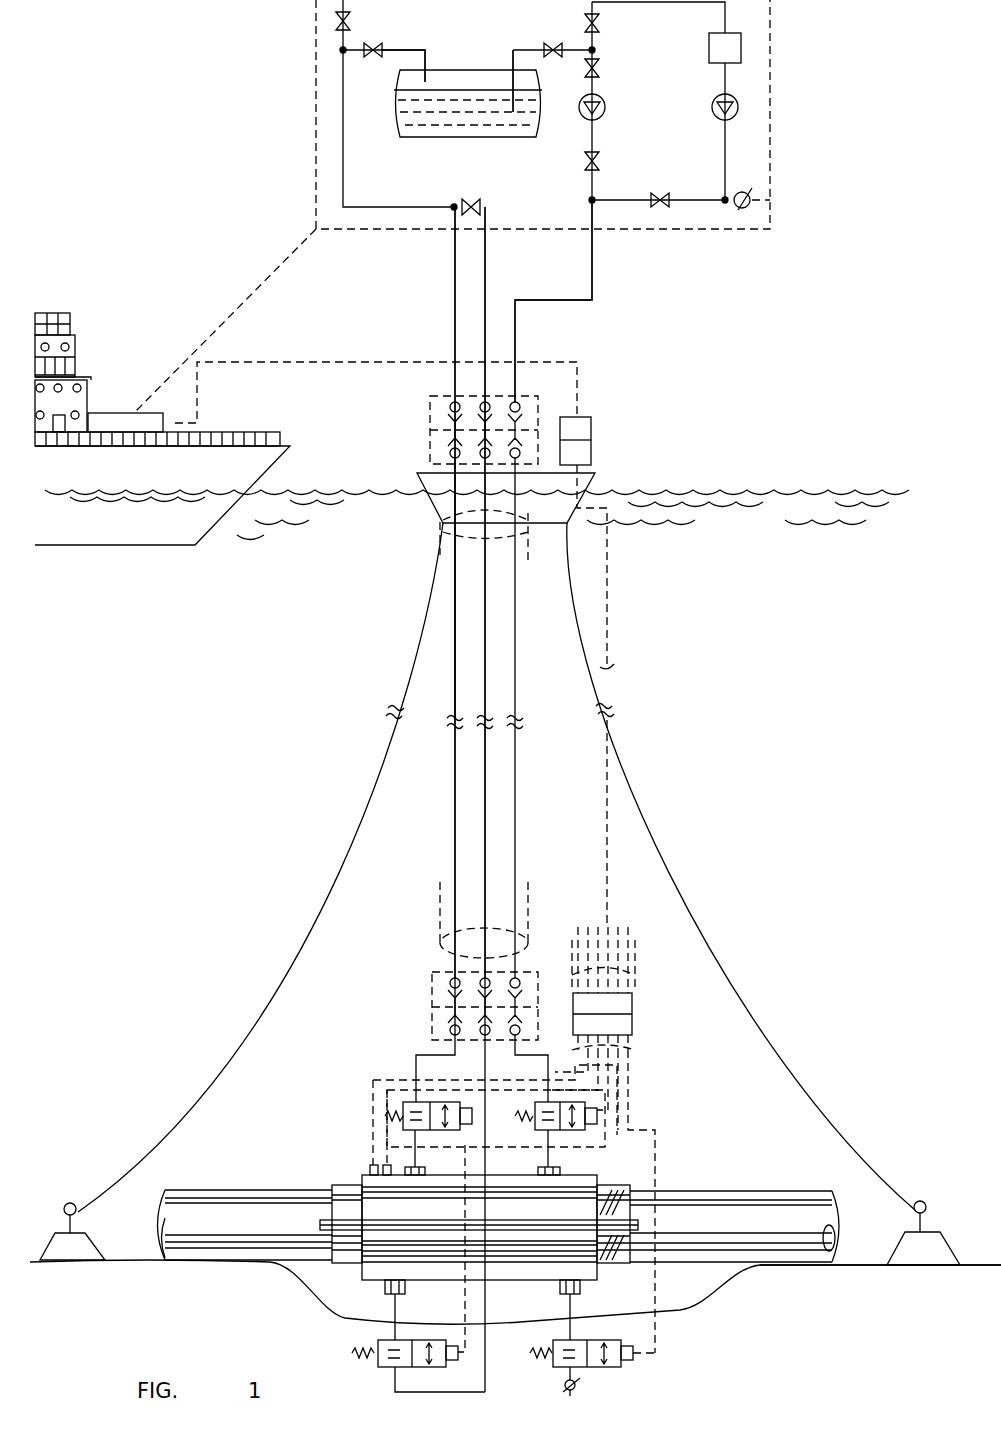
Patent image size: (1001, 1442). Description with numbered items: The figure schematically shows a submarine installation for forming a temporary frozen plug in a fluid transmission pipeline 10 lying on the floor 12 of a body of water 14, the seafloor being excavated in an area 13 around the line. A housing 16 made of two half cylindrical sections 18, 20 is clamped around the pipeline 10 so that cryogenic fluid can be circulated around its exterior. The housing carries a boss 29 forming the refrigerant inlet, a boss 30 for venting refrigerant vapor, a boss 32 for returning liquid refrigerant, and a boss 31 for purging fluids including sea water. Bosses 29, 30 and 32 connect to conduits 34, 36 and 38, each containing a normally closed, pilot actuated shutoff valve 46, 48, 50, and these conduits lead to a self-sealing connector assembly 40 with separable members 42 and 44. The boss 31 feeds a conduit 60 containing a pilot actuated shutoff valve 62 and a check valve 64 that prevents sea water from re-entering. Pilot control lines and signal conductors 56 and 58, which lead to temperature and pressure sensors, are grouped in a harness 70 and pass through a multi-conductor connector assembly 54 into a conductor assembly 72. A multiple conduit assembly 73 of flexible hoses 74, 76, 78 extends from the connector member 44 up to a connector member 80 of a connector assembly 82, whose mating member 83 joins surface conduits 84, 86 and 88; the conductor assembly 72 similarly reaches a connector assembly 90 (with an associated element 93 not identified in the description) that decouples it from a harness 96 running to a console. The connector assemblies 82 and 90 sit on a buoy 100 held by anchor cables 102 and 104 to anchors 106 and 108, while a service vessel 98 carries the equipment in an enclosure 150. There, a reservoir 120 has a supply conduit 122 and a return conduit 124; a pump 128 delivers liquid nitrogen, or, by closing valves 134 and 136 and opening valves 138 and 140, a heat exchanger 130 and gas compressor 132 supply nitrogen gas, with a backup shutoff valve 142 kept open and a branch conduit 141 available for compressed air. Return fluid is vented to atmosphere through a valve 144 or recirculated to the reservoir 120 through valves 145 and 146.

The fluid transmission pipeline 10 is at (762, 1182).
The floor of body of water 12 is at (870, 1265).
The excavated area 13 is at (735, 1263).
The body of water 14 is at (820, 631).
The housing 16 is at (604, 1197).
The housing half section 18 is at (333, 1185).
The housing half section 20 is at (356, 1265).
The boss 29 is at (563, 1169).
The boss 30 is at (424, 1168).
The boss 31 is at (565, 1290).
The boss 32 is at (388, 1290).
The conduit 34 is at (548, 1145).
The conduit 36 is at (416, 1138).
The conduit 38 is at (397, 1312).
The connector assembly 40 is at (434, 988).
The connector member 42 is at (432, 1023).
The connector member 44 is at (440, 970).
The shutoff valve 46 is at (533, 1118).
The shutoff valve 48 is at (398, 1118).
The shutoff valve 50 is at (418, 1367).
The connector assembly 54 is at (645, 1020).
The signal conductor 56 is at (385, 1090).
The signal conductor 58 is at (375, 1132).
The conduit 60 is at (572, 1312).
The pilot actuated shutoff valve 62 is at (612, 1367).
The check valve 64 is at (563, 1386).
The harness assembly 70 is at (625, 1057).
The conductor assembly 72 is at (632, 985).
The multiple conduit assembly 73 is at (538, 907).
The conduit 74 is at (515, 778).
The conduit 76 is at (455, 775).
The conduit 78 is at (484, 817).
The connector member 80 is at (430, 452).
The connector assembly 82 is at (446, 417).
The connector member 83 is at (425, 398).
The conduit 84 is at (515, 343).
The conduit 86 is at (455, 297).
The conduit 88 is at (487, 263).
The connector assembly 90 is at (608, 435).
The control unit 93 is at (592, 450).
The harness 96 is at (582, 393).
The service vessel 98 is at (112, 372).
The buoy 100 is at (442, 522).
The anchor cable 102 is at (345, 861).
The anchor cable 104 is at (668, 858).
The anchor 106 is at (60, 1221).
The anchor 108 is at (928, 1230).
The reservoir 120 is at (478, 70).
The supply conduit 122 is at (525, 52).
The return conduit 124 is at (388, 48).
The pump 128 is at (605, 107).
The heat exchanger 130 is at (705, 54).
The gas compressor 132 is at (710, 100).
The valve 134 is at (600, 68).
The valve 136 is at (600, 160).
The valve 138 is at (599, 20).
The valve 140 is at (660, 200).
The branch conduit 141 is at (752, 190).
The backup shutoff valve 142 is at (550, 39).
The vent valve 144 is at (334, 21).
The valve 145 is at (476, 198).
The valve 146 is at (360, 56).
The enclosure 150 is at (316, 128).